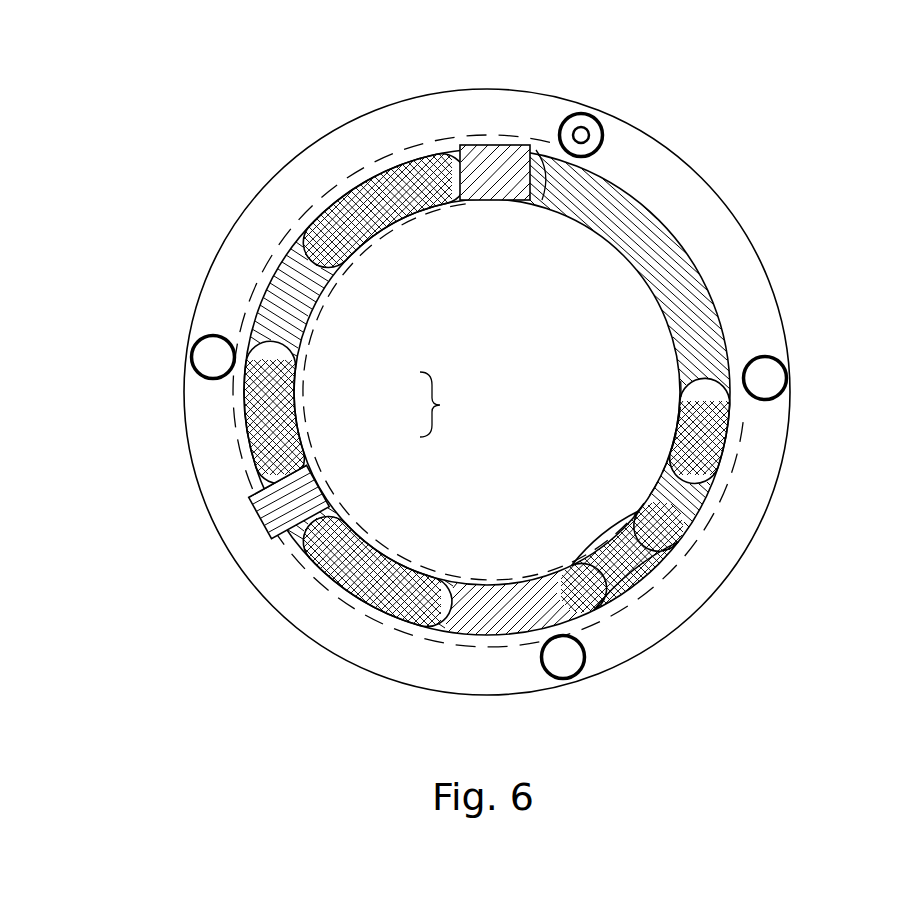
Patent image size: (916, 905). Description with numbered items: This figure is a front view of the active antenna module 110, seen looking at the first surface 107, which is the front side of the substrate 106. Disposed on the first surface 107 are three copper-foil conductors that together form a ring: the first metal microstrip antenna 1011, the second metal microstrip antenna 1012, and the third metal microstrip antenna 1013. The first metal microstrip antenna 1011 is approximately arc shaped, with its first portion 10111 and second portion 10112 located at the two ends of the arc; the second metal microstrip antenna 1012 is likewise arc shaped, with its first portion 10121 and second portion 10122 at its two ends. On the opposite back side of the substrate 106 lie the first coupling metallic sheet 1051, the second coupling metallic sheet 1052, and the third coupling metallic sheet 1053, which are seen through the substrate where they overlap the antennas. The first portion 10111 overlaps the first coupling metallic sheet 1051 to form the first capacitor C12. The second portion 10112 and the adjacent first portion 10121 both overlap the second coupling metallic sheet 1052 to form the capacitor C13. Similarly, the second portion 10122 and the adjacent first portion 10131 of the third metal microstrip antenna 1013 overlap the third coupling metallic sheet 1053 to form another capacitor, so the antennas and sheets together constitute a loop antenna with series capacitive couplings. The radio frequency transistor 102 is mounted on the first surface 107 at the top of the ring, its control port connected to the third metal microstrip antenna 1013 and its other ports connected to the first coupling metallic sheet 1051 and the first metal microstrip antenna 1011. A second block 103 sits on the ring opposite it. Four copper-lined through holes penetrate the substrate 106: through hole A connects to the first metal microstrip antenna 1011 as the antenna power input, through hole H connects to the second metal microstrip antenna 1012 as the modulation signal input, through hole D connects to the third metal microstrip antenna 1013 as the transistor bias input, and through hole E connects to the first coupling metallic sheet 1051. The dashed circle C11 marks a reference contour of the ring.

The active antenna module 110 is at (487, 46).
The radio frequency transistor 102 is at (490, 147).
The second positioning block 103 is at (263, 518).
The substrate 106 is at (223, 317).
The first surface 107 is at (667, 327).
The first metal microstrip antenna 1011 is at (282, 278).
The second metal microstrip antenna 1012 is at (517, 622).
The third metal microstrip antenna 1013 is at (657, 245).
The first portion of the first metal microstrip antenna 10111 is at (360, 210).
The second portion of the first metal microstrip antenna 10112 is at (267, 392).
The first portion of the second metal microstrip antenna 10121 is at (343, 527).
The second portion of the second metal microstrip antenna 10122 is at (652, 527).
The first portion of the third metal microstrip antenna 10131 is at (703, 452).
The first coupling metallic sheet 1051 is at (308, 212).
The second coupling metallic sheet 1052 is at (237, 475).
The third coupling metallic sheet 1053 is at (737, 462).
The outer reference circle C11 is at (350, 150).
The first capacitor C12 is at (553, 412).
The third capacitor C13 is at (451, 404).
The through hole A is at (209, 409).
The through hole E is at (592, 142).
The through hole D is at (765, 403).
The through hole H is at (578, 657).